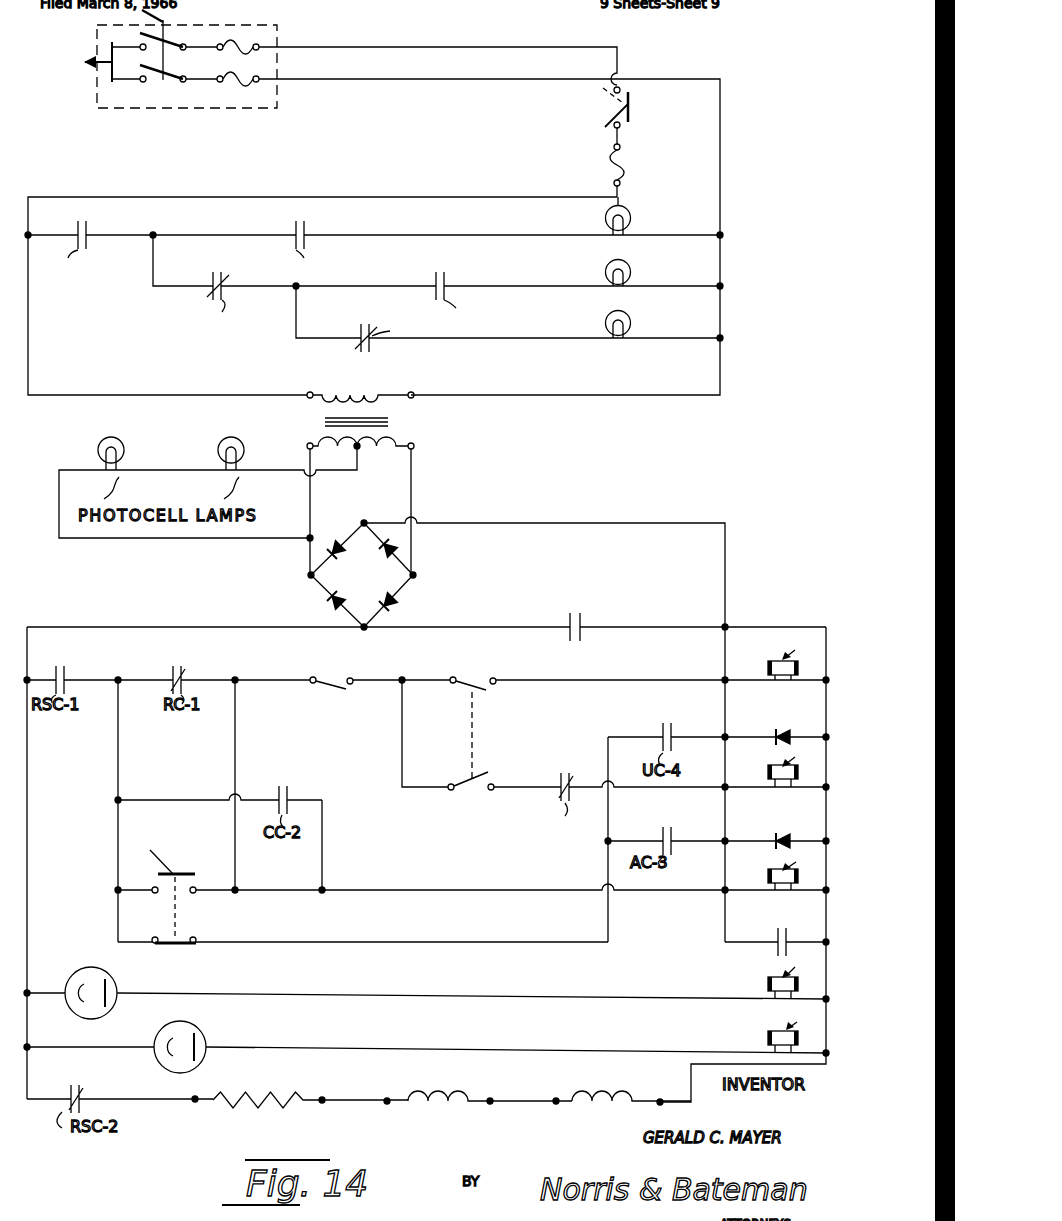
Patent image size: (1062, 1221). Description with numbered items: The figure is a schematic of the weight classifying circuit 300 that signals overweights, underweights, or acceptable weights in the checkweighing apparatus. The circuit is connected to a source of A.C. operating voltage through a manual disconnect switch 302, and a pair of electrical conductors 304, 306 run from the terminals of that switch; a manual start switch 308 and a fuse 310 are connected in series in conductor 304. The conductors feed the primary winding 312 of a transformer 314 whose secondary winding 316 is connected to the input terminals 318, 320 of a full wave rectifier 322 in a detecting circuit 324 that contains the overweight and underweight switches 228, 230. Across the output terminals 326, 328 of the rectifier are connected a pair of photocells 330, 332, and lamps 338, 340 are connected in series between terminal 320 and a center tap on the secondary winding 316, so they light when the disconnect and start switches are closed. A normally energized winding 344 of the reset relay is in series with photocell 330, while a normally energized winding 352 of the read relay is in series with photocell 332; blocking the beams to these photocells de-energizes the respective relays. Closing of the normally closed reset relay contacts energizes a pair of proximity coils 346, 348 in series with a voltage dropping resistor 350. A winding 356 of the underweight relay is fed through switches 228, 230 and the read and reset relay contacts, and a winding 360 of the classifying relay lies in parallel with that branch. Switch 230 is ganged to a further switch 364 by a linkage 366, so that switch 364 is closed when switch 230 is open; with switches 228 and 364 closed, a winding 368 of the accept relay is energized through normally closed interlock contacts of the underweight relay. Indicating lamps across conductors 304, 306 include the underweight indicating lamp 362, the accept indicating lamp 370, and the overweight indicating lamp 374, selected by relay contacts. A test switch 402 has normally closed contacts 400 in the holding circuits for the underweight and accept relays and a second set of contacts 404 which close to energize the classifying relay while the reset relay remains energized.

The manual disconnect switch 302 is at (202, 82).
The electrical conductor 304 is at (500, 48).
The electrical conductor 306 is at (507, 80).
The manual start switch 308 is at (631, 105).
The fuse 310 is at (624, 170).
The weight classifying circuit 300 is at (331, 194).
The primary winding 312 is at (378, 403).
The transformer 314 is at (308, 424).
The secondary winding 316 is at (414, 452).
The input terminal 318 is at (415, 580).
The input terminal 320 is at (311, 578).
The full wave rectifier 322 is at (398, 562).
The detecting circuit 324 is at (503, 520).
The output terminal 326 is at (364, 523).
The output terminal 328 is at (368, 627).
The photocell 330 is at (156, 1040).
The photocell 332 is at (68, 1016).
The lamp 338 is at (242, 456).
The lamp 340 is at (132, 437).
The winding 344 is at (768, 1040).
The proximity coil 346 is at (608, 1095).
The proximity coil 348 is at (450, 1108).
The voltage dropping resistor 350 is at (214, 1104).
The winding 352 is at (768, 983).
The winding 356 is at (768, 668).
The winding 360 is at (768, 876).
The underweight indicating lamp 362 is at (605, 218).
The switch 364 is at (450, 790).
The linkage 366 is at (478, 748).
The winding 368 is at (768, 773).
The accept indicating lamp 370 is at (605, 272).
The overweight indicating lamp 374 is at (605, 323).
The normally closed contacts 400 is at (178, 946).
The switch 402 is at (202, 899).
The contacts 404 is at (177, 874).
The switch 228 is at (310, 678).
The switch 230 is at (452, 678).